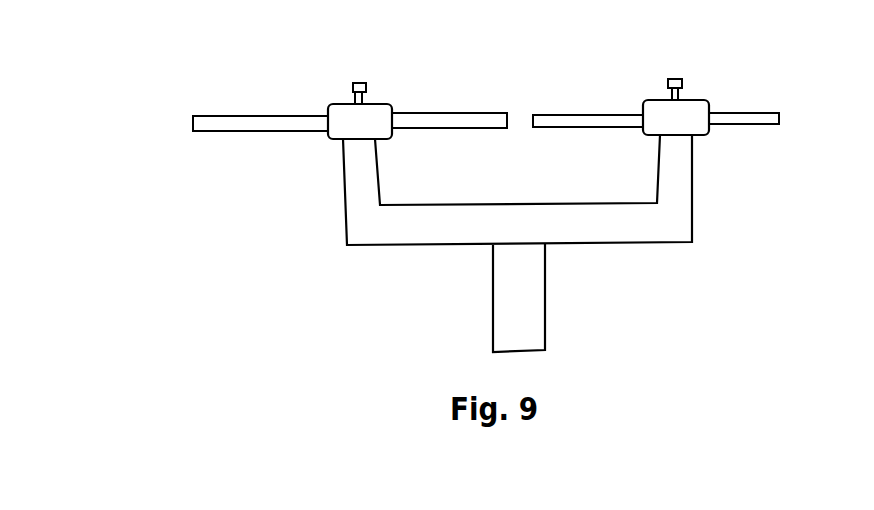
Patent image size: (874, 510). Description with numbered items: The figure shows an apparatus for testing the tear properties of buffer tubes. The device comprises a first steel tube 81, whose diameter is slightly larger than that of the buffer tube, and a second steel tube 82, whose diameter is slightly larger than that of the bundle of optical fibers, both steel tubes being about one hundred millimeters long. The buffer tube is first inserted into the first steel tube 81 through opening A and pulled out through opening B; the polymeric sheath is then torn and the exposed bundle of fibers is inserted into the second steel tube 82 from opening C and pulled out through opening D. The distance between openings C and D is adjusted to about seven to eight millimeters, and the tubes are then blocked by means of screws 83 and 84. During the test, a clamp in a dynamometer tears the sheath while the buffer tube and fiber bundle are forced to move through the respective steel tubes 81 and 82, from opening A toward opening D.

The first steel tube 81 is at (260, 92).
The second steel tube 82 is at (733, 85).
The screw 83 is at (339, 59).
The screw 84 is at (654, 55).
The opening A is at (193, 119).
The opening B is at (510, 115).
The opening C is at (532, 115).
The opening D is at (782, 117).